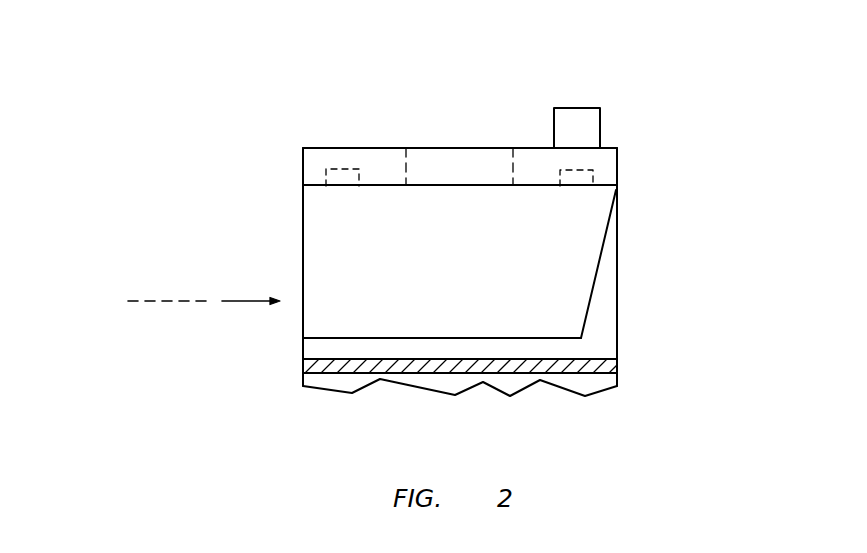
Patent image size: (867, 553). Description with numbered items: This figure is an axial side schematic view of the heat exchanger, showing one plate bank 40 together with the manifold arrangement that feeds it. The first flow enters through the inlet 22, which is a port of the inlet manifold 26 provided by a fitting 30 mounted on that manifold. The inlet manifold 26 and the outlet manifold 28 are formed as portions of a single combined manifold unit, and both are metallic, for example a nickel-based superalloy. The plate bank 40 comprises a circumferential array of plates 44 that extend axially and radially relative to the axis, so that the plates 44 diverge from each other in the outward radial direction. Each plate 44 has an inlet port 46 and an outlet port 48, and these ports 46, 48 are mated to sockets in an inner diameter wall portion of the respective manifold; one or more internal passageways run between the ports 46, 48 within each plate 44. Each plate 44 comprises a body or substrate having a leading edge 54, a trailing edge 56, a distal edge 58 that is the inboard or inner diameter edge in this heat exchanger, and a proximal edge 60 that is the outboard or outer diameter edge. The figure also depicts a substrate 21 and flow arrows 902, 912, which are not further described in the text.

The plate bank 40 is at (438, 223).
The inlet 22 is at (626, 75).
The fitting 30 is at (600, 122).
The inlet manifold 26 is at (504, 127).
The outlet manifold 28 is at (375, 150).
The outlet port 48 is at (343, 168).
The inlet port 46 is at (574, 168).
The proximal edge 60 is at (463, 183).
The plate 44 is at (315, 204).
The leading edge 54 is at (303, 233).
The trailing edge 56 is at (617, 258).
The distal edge 58 is at (548, 327).
The substrate 21 is at (606, 355).
The incident light path 902 is at (157, 302).
The light beam 912 is at (240, 302).